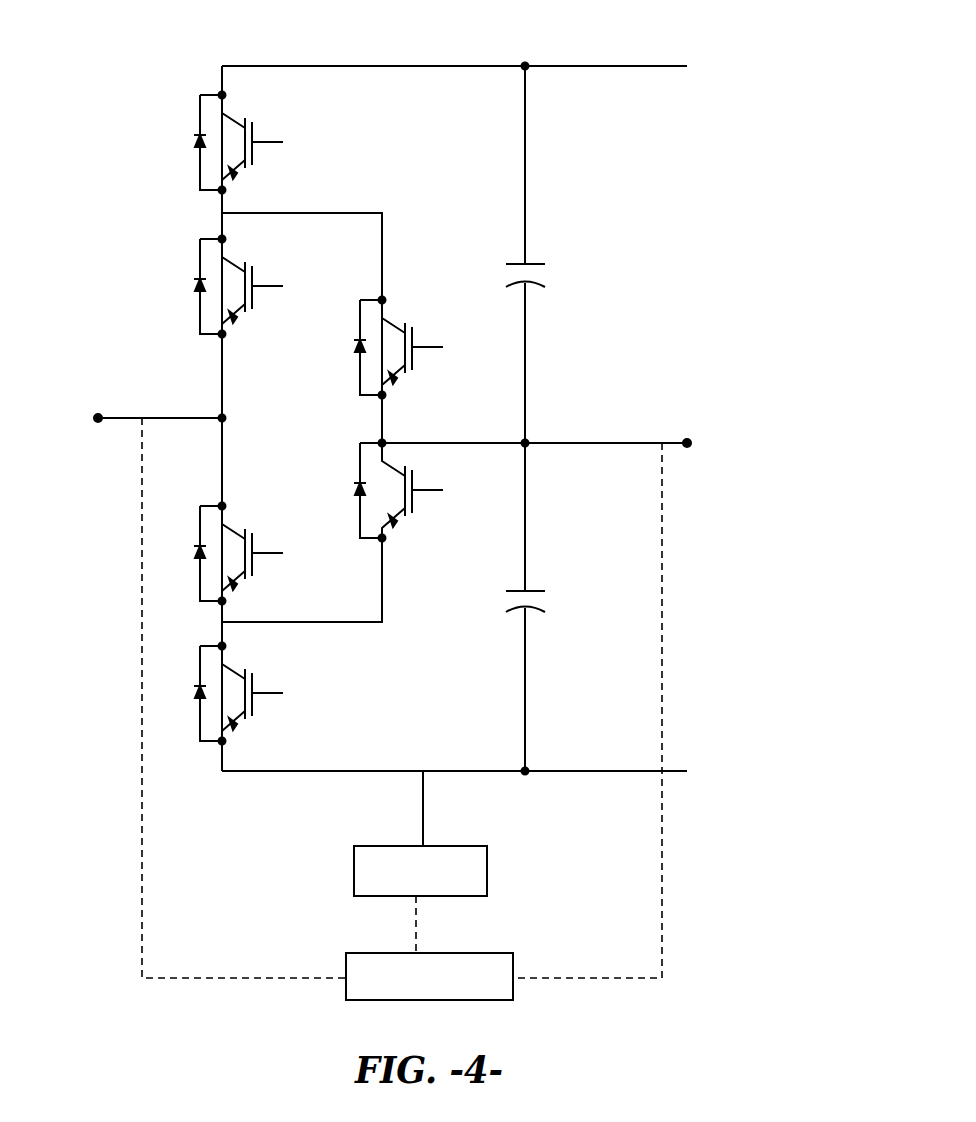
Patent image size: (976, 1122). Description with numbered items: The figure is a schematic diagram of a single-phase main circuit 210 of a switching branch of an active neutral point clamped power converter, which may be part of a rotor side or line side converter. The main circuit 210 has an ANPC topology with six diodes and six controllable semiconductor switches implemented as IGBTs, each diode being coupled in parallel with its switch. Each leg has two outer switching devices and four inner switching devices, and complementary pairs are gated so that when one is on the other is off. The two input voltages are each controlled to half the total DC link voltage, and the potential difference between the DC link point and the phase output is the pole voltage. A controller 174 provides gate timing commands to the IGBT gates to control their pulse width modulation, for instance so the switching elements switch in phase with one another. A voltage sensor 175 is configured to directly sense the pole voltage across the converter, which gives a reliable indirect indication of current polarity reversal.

The single-phase main circuit 210 is at (122, 83).
The controller 174 is at (368, 870).
The voltage sensor 175 is at (346, 978).